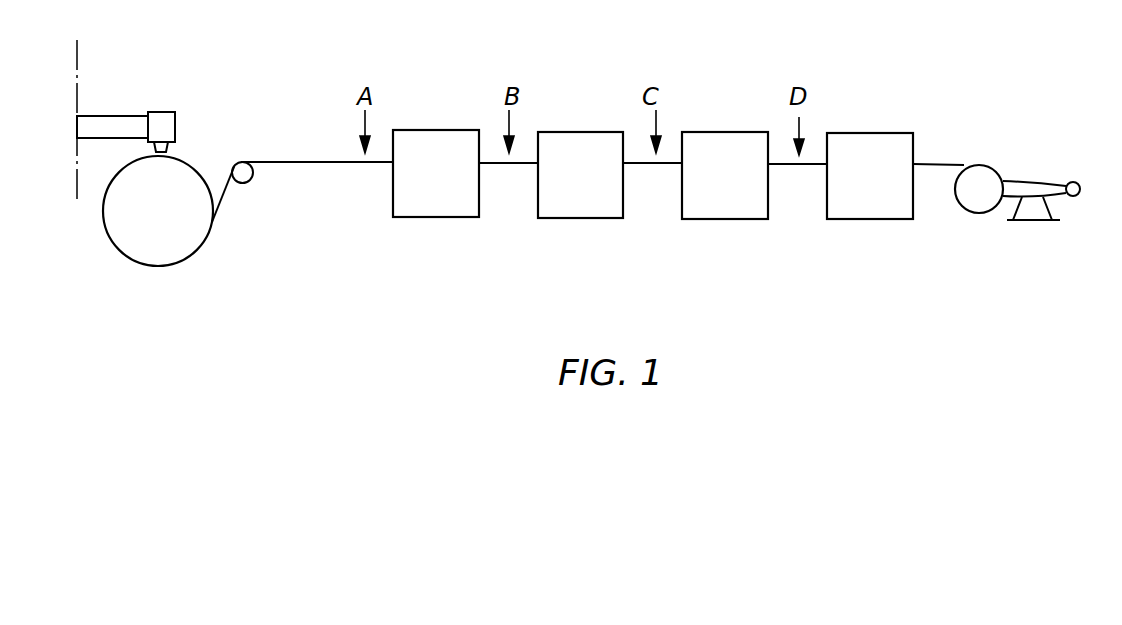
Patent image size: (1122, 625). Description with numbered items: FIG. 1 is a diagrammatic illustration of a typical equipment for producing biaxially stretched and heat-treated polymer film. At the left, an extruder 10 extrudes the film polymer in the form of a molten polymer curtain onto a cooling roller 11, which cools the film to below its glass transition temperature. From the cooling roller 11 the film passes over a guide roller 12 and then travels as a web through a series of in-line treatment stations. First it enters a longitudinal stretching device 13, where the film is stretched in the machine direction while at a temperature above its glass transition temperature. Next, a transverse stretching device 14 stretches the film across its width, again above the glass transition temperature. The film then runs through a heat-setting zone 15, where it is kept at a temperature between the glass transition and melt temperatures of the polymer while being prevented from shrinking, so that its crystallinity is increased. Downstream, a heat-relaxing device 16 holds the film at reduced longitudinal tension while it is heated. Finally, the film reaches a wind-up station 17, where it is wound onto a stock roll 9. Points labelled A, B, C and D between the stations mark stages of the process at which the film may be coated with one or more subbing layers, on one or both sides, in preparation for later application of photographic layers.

The stock roll 9 is at (982, 202).
The extruder 10 is at (128, 118).
The cooling roller 11 is at (135, 248).
The guide roller 12 is at (242, 183).
The longitudinal stretching device 13 is at (433, 210).
The transverse stretching device 14 is at (577, 210).
The heat-setting zone 15 is at (727, 210).
The heat-relaxing device 16 is at (875, 210).
The wind-up station 17 is at (1036, 169).